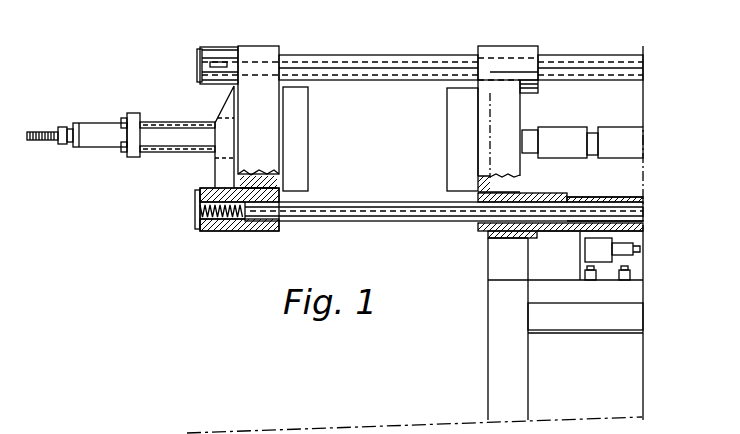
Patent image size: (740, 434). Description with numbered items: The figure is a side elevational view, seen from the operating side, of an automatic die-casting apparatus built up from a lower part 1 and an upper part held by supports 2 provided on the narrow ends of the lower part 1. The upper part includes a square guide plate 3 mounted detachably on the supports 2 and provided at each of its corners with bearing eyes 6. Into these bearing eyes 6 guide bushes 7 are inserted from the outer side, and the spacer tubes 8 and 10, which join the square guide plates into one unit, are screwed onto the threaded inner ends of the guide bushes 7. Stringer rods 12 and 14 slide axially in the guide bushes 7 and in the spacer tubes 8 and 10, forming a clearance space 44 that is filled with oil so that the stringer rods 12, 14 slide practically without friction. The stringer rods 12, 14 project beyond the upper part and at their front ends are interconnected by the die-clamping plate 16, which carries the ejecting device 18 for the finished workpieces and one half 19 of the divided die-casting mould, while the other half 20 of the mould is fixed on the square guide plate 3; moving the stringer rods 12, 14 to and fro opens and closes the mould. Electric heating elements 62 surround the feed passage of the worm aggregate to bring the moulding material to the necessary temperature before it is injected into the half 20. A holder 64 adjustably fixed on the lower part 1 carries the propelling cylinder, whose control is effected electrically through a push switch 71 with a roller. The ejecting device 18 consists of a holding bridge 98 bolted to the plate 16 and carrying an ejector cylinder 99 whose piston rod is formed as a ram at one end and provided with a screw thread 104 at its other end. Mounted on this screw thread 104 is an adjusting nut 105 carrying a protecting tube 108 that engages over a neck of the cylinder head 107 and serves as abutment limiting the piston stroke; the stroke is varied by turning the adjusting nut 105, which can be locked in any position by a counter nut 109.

The lower part 1 is at (495, 366).
The supports 2 is at (495, 272).
The square guide plate 3 is at (480, 92).
The bearing eyes 6 is at (505, 47).
The guide bushes 7 is at (496, 237).
The spacer tube 8 is at (580, 53).
The spacer tube 10 is at (593, 199).
The stringer rod 12 is at (352, 55).
The stringer rod 14 is at (341, 222).
The die-clamping plate 16 is at (255, 58).
The ejecting device 18 is at (152, 154).
The half of the die-casting mould 19 is at (302, 135).
The half of the die-casting mould 20 is at (452, 133).
The clearance space 44 is at (623, 203).
The electric heating elements 62 is at (608, 127).
The holder 64 is at (612, 268).
The push switch 71 is at (588, 248).
The holding bridge 98 is at (220, 102).
The ejector cylinder 99 is at (185, 141).
The screw thread 104 is at (37, 133).
The adjusting nut 105 is at (71, 145).
The cylinder head 107 is at (135, 114).
The protecting tube 108 is at (107, 144).
The counter nut 109 is at (62, 127).